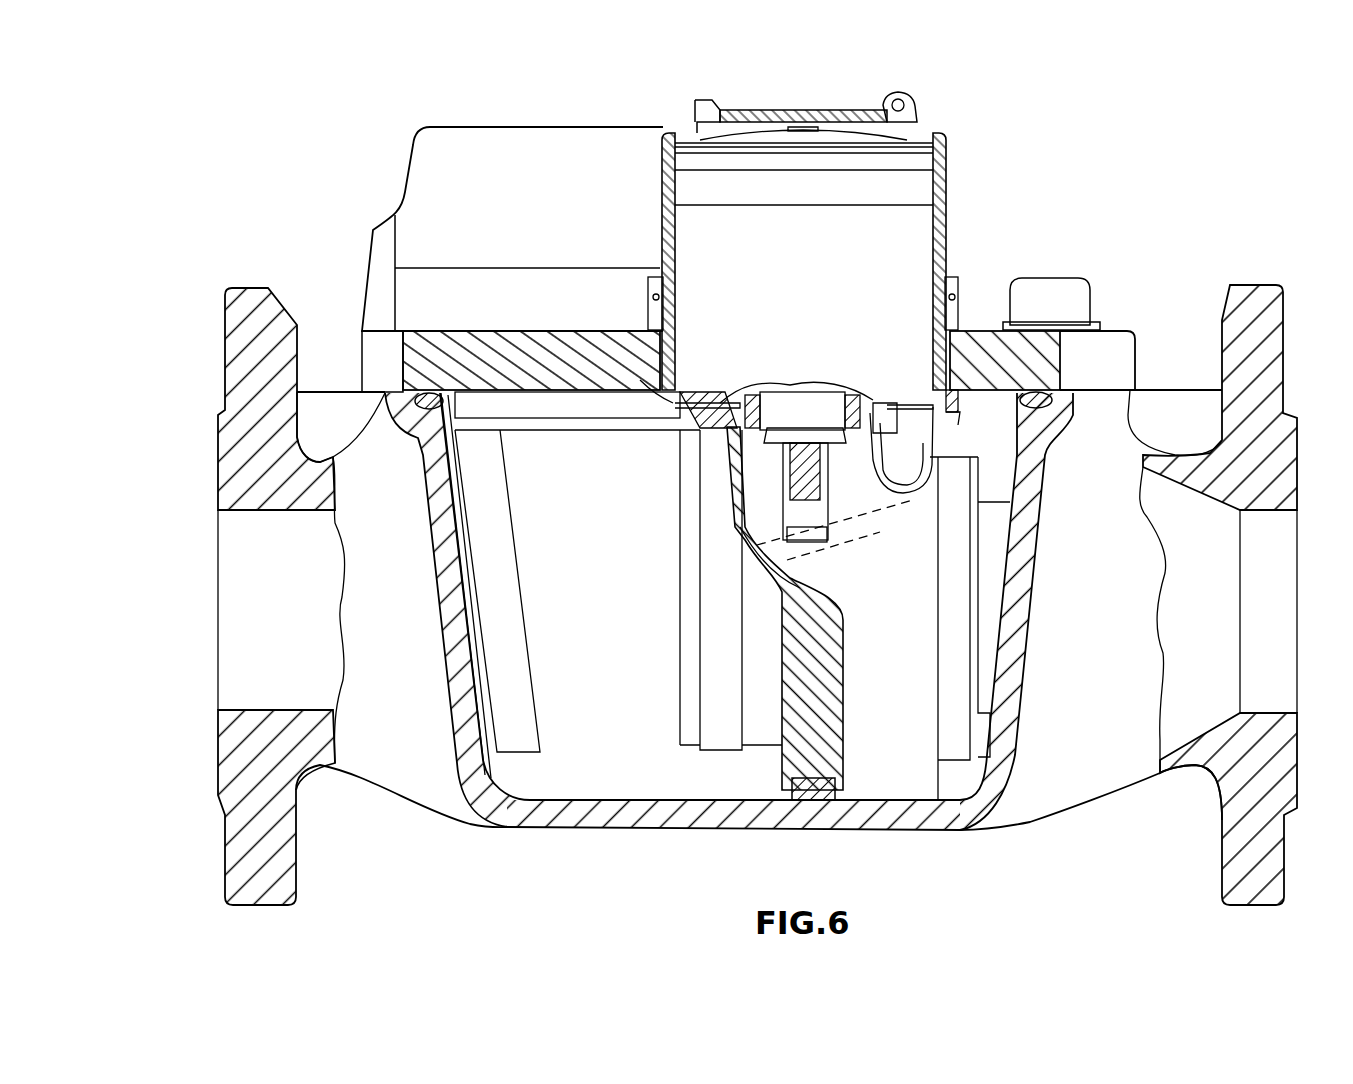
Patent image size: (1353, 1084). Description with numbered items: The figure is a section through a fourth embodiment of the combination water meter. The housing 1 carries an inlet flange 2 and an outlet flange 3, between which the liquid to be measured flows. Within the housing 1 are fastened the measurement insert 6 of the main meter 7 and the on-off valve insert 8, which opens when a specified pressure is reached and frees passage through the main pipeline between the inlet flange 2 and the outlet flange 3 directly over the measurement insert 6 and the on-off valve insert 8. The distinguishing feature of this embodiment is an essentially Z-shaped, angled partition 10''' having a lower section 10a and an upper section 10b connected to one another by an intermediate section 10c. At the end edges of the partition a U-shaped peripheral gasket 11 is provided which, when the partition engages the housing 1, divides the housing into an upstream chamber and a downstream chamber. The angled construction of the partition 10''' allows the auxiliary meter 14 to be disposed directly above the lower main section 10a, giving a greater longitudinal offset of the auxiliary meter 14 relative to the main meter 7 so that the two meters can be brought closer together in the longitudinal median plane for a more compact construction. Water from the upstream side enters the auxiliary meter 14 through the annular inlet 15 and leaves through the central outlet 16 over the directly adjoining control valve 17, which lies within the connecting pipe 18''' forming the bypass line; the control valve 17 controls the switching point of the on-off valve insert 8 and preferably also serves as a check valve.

The housing 1 is at (648, 833).
The inlet flange 2 is at (220, 783).
The outlet flange 3 is at (1283, 833).
The measurement insert 6 is at (572, 728).
The main meter 7 is at (487, 142).
The on-off valve insert 8 is at (963, 637).
The lower section 10a is at (835, 640).
The upper section 10b is at (958, 433).
The intermediate section 10c is at (850, 530).
The partition 10''' is at (865, 685).
The gasket 11 is at (800, 800).
The auxiliary meter 14 is at (956, 186).
The annular inlet 15 is at (703, 430).
The central outlet 16 is at (832, 400).
The control valve 17 is at (772, 505).
The connecting pipe 18''' is at (690, 590).